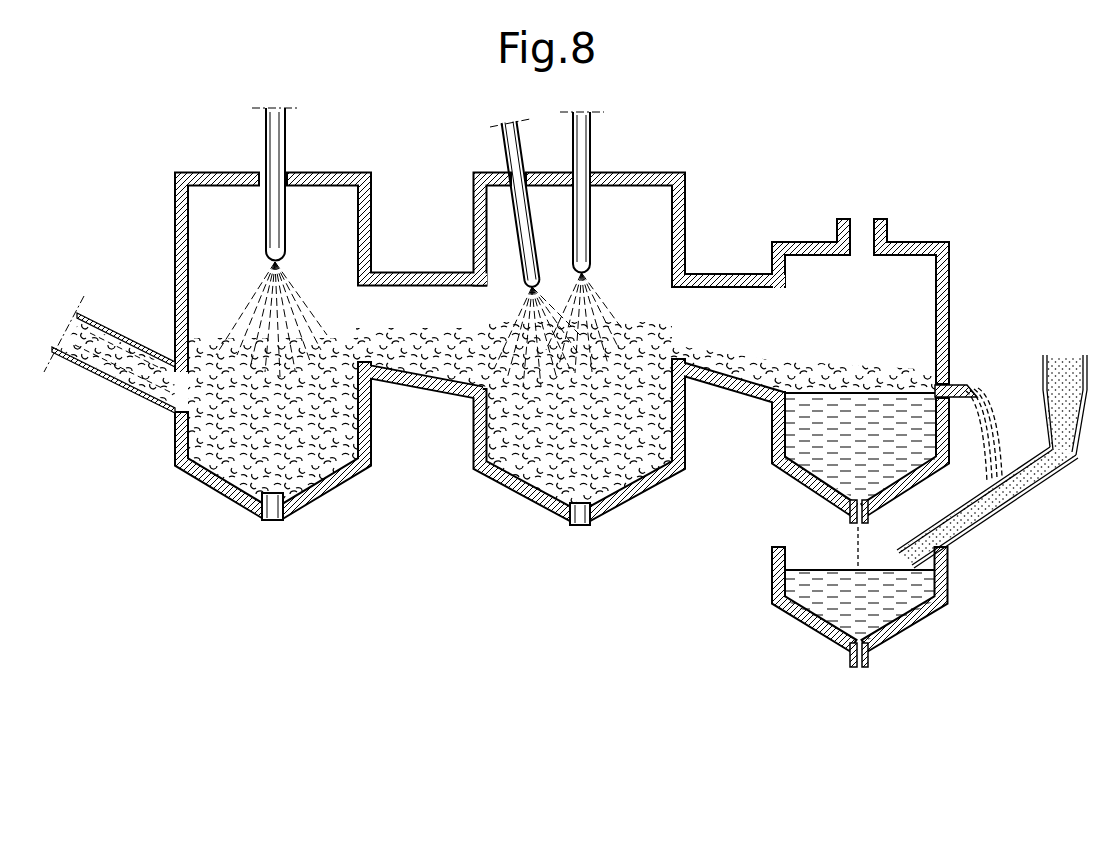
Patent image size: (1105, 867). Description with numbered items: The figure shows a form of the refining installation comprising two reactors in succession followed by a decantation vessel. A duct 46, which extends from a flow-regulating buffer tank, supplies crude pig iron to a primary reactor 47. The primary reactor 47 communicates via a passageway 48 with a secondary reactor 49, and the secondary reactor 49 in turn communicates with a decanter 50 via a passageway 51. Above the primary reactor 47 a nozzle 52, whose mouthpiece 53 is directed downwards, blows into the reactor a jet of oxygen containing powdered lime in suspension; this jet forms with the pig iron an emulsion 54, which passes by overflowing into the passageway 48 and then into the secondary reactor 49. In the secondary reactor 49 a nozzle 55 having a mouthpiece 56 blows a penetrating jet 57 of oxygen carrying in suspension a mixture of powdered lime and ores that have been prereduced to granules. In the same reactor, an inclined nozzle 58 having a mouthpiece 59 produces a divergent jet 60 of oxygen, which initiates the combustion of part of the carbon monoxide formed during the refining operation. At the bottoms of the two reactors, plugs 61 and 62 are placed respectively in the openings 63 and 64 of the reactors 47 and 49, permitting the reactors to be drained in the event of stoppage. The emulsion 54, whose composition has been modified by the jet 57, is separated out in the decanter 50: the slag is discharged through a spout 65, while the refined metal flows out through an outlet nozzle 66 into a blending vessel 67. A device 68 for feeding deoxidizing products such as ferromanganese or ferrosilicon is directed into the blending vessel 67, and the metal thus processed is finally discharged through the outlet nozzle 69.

The duct 46 is at (112, 378).
The primary reactor 47 is at (192, 271).
The passageway 48 is at (395, 293).
The secondary reactor 49 is at (493, 220).
The decanter 50 is at (808, 262).
The passageway 51 is at (725, 297).
The nozzle 52 is at (265, 146).
The mouthpiece 53 is at (287, 257).
The emulsion 54 is at (333, 468).
The nozzle 55 is at (590, 149).
The mouthpiece 56 is at (586, 268).
The penetrating jet 57 is at (587, 304).
The nozzle 58 is at (516, 150).
The mouthpiece 59 is at (539, 276).
The divergent jet 60 is at (513, 316).
The plug 61 is at (286, 512).
The plug 62 is at (592, 520).
The opening 63 is at (262, 510).
The opening 64 is at (569, 520).
The spout 65 is at (948, 382).
The outlet nozzle 66 is at (848, 520).
The blending vessel 67 is at (797, 561).
The feeding device 68 is at (1028, 480).
The outlet nozzle 69 is at (848, 662).